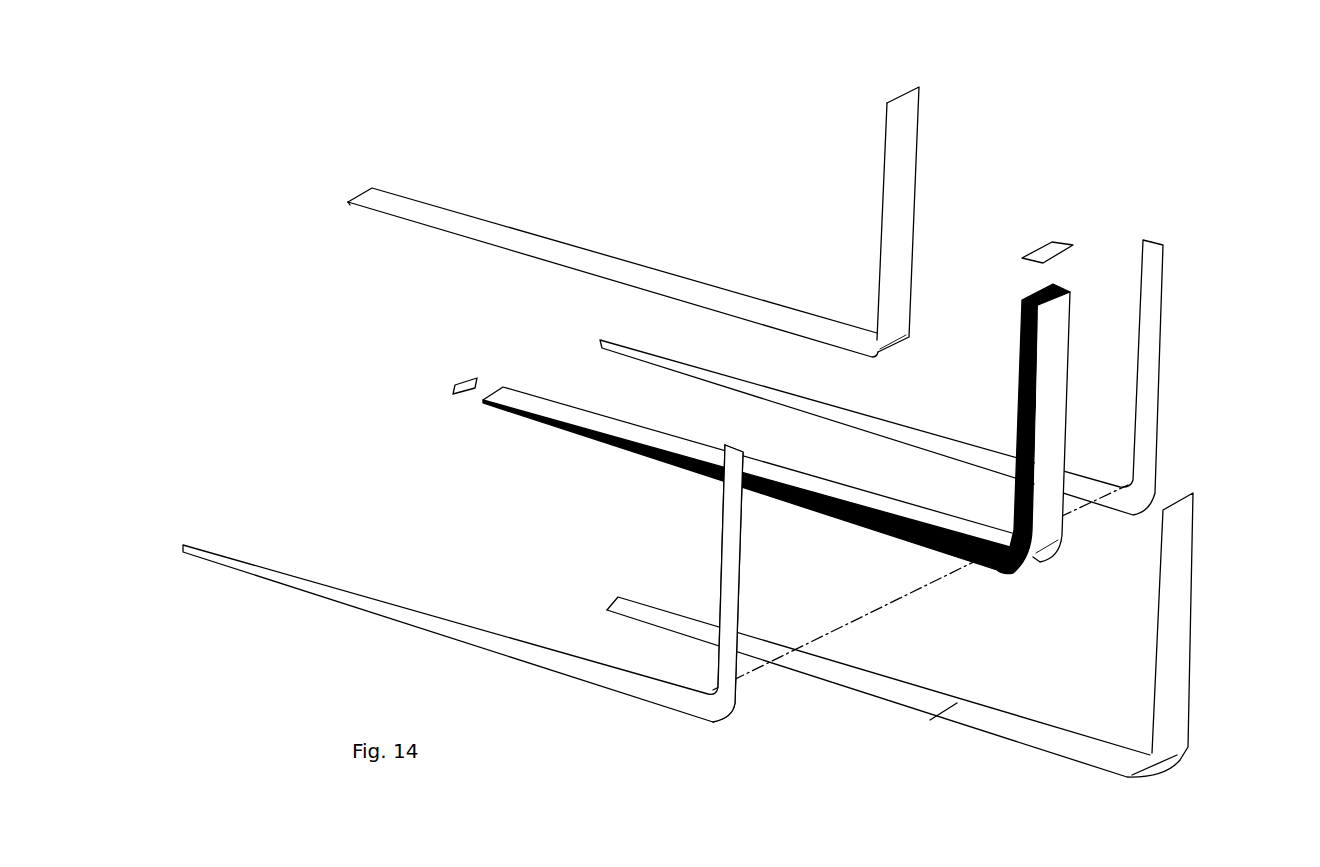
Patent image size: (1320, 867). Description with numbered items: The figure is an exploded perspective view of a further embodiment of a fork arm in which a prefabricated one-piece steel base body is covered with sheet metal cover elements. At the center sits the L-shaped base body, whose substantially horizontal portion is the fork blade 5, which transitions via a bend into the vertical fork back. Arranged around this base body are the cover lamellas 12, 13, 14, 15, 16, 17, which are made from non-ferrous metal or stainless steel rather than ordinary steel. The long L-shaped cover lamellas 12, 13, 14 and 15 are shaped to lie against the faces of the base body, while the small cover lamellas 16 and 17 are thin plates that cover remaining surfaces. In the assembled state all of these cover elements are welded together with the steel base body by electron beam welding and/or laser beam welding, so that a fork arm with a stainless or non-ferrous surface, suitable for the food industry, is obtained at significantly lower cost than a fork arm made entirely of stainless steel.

The fork blade 5 is at (527, 405).
The cover lamella 12 is at (1150, 285).
The cover lamella 13 is at (345, 598).
The cover lamella 14 is at (403, 205).
The cover lamella 15 is at (1172, 669).
The cover lamella 16 is at (452, 385).
The cover lamella 17 is at (1048, 250).